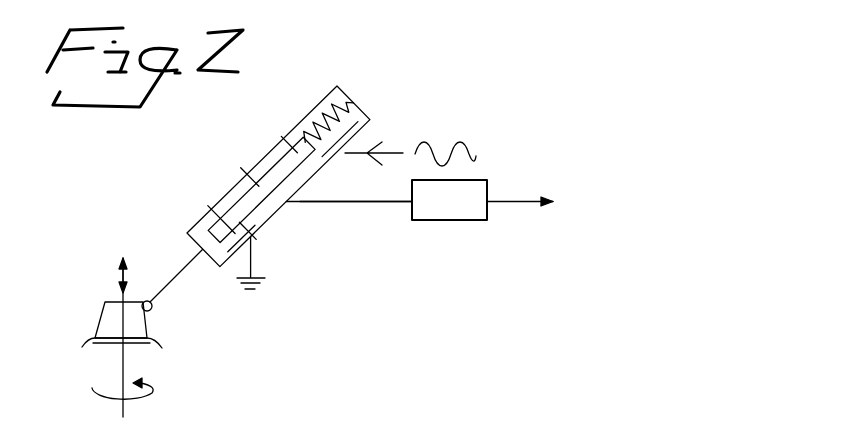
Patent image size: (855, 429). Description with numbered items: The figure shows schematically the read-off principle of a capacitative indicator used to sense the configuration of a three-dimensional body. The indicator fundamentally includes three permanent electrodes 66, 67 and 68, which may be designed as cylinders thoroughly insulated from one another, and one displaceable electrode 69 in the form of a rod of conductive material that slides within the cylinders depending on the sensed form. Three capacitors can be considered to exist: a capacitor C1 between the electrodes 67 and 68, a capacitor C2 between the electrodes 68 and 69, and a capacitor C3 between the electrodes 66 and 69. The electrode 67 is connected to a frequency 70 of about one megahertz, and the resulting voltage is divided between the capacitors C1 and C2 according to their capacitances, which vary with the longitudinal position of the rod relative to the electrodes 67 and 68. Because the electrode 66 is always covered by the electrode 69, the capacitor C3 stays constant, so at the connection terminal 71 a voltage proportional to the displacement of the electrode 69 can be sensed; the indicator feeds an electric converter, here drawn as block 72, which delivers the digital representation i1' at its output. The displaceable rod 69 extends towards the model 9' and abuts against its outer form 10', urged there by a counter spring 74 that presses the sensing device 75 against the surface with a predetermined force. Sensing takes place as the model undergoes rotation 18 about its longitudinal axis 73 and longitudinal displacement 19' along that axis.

The counter spring 74 is at (352, 103).
The permanent electrode 67 is at (366, 133).
The frequency 70 is at (442, 138).
The displaceable electrode 69 is at (226, 195).
The permanent electrode 66 is at (289, 204).
The permanent electrode 68 is at (262, 233).
The connection terminal 71 is at (372, 199).
The detector 72 is at (412, 215).
The digital representation i1' is at (520, 223).
The capacitor C1 is at (282, 138).
The capacitor C2 is at (205, 210).
The capacitor C3 is at (252, 170).
The model 9' is at (103, 327).
The longitudinal displacement 19' is at (148, 265).
The outer form 10' is at (97, 320).
The sensing device 75 is at (153, 308).
The longitudinal axis 73 is at (120, 362).
The rotation 18 is at (150, 393).